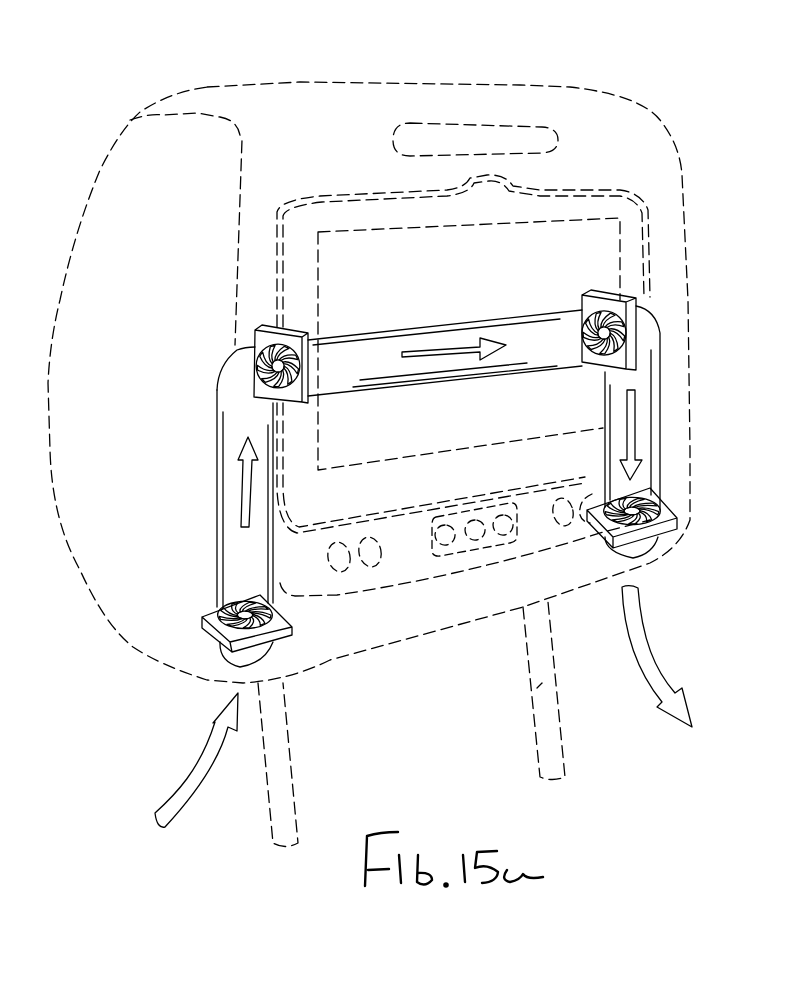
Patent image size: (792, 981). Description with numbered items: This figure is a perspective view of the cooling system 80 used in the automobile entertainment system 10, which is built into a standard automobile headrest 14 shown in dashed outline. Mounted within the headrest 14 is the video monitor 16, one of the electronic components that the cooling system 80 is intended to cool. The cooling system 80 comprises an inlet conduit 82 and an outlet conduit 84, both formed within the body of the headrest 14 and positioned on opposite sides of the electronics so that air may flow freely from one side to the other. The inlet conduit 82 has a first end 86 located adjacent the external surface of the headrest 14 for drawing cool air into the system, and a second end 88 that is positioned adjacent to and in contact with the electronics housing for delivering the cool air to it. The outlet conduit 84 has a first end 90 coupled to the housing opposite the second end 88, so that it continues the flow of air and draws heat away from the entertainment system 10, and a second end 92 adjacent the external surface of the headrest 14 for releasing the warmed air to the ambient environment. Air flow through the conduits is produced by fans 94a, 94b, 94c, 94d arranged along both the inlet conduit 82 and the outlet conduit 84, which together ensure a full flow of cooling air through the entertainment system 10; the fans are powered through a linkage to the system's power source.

The automobile entertainment system 10 is at (303, 83).
The headrest 14 is at (120, 182).
The video monitor 16 is at (645, 230).
The cooling system 80 is at (446, 531).
The inlet conduit 82 is at (227, 473).
The outlet conduit 84 is at (653, 457).
The first end 86 is at (222, 662).
The second end 88 is at (240, 357).
The first end 90 is at (563, 313).
The second end 92 is at (658, 538).
The fan 94a is at (210, 607).
The fan 94b is at (260, 317).
The fan 94c is at (655, 322).
The fan 94d is at (675, 512).